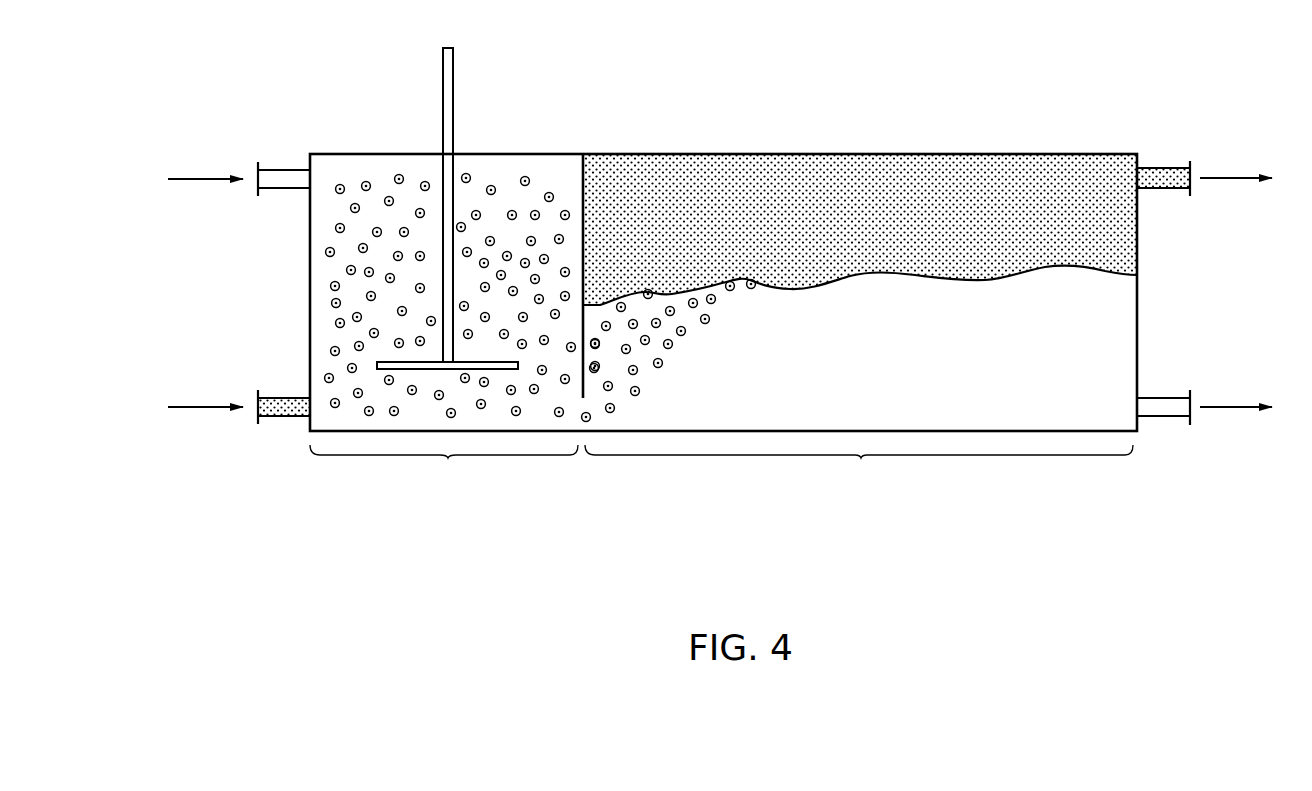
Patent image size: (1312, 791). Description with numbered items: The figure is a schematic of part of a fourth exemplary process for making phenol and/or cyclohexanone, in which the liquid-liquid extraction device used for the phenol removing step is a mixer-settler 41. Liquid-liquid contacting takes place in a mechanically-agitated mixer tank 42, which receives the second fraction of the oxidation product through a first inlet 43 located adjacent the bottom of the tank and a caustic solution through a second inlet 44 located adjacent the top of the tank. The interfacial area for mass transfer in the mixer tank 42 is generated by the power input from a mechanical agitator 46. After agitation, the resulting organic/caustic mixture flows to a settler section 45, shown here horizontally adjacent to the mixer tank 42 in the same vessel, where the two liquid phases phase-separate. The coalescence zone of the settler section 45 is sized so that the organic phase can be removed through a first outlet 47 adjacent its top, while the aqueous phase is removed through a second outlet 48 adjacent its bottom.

The mixer-settler 41 is at (895, 153).
The mixer tank 42 is at (448, 457).
The first inlet 43 is at (282, 418).
The second inlet 44 is at (287, 189).
The settler section 45 is at (861, 457).
The mechanical agitator 46 is at (453, 123).
The first outlet 47 is at (1165, 190).
The second outlet 48 is at (1160, 417).